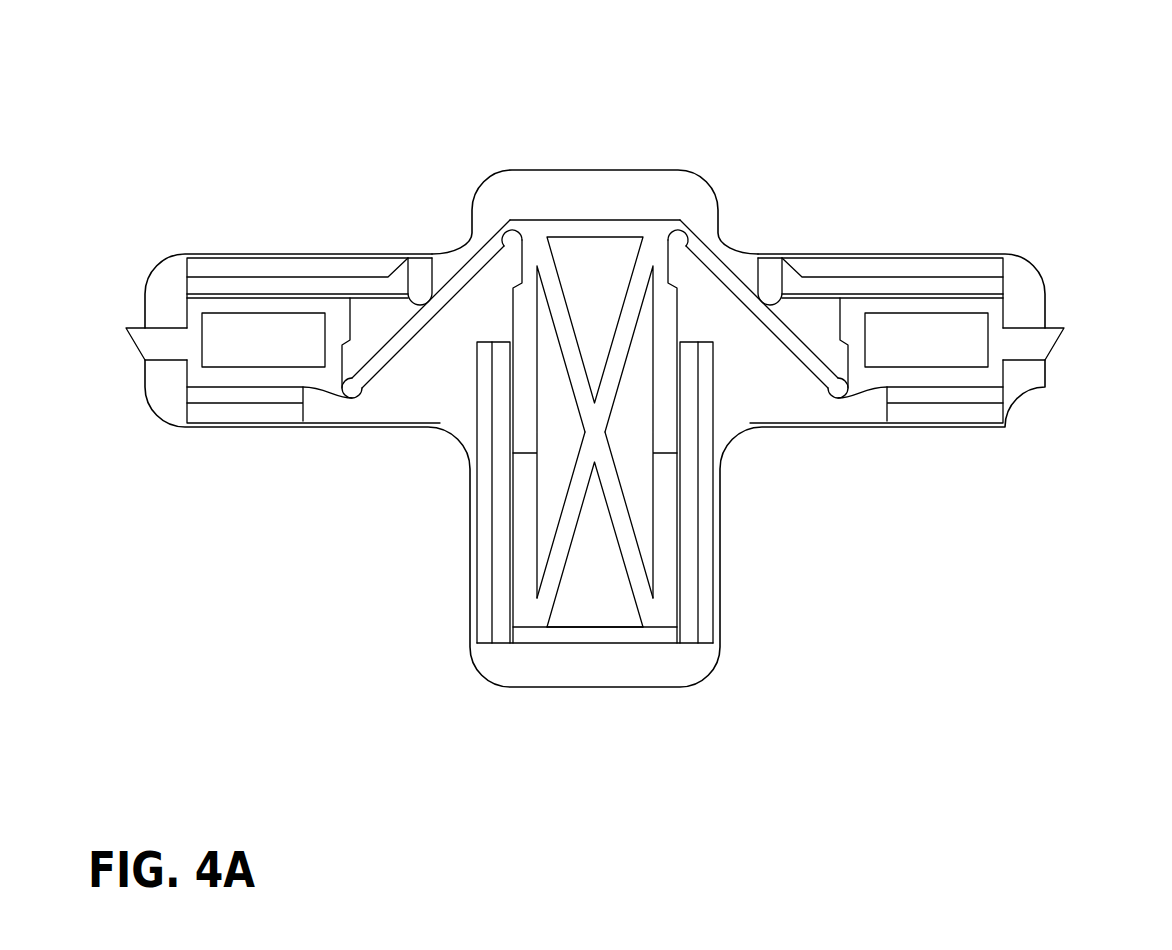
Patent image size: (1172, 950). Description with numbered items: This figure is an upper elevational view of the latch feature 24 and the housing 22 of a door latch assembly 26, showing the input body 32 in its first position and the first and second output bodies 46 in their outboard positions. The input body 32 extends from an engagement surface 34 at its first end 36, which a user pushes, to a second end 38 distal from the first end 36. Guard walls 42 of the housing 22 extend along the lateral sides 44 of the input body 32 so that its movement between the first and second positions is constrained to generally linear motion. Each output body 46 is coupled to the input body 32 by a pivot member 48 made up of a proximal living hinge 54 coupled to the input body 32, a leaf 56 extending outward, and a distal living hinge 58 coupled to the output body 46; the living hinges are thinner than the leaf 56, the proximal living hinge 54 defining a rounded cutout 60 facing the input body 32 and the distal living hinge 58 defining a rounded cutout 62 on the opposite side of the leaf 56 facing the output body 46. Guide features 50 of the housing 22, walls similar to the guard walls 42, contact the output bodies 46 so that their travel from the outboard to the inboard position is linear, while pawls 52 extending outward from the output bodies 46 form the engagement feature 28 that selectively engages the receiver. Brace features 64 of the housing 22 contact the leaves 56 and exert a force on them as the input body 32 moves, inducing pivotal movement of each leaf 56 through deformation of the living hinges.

The housing 22 is at (633, 198).
The latch feature 24 is at (609, 460).
The door latch assembly 26 is at (938, 178).
The engagement feature 28 is at (163, 327).
The input body 32 is at (567, 533).
The engagement surface 34 is at (582, 650).
The first end 36 is at (610, 637).
The second end 38 is at (593, 223).
The guard walls 42 is at (503, 453).
The lateral sides 44 is at (514, 408).
The output body 46 is at (233, 296).
The pivot member 48 is at (892, 296).
The guide feature 50 is at (278, 287).
The pawls 52 is at (143, 343).
The proximal living hinge 54 is at (775, 68).
The leaf 56 is at (470, 268).
The distal living hinge 58 is at (350, 402).
The rounded cutout 60 is at (511, 229).
The rounded cutout 62 is at (350, 378).
The brace feature 64 is at (422, 295).